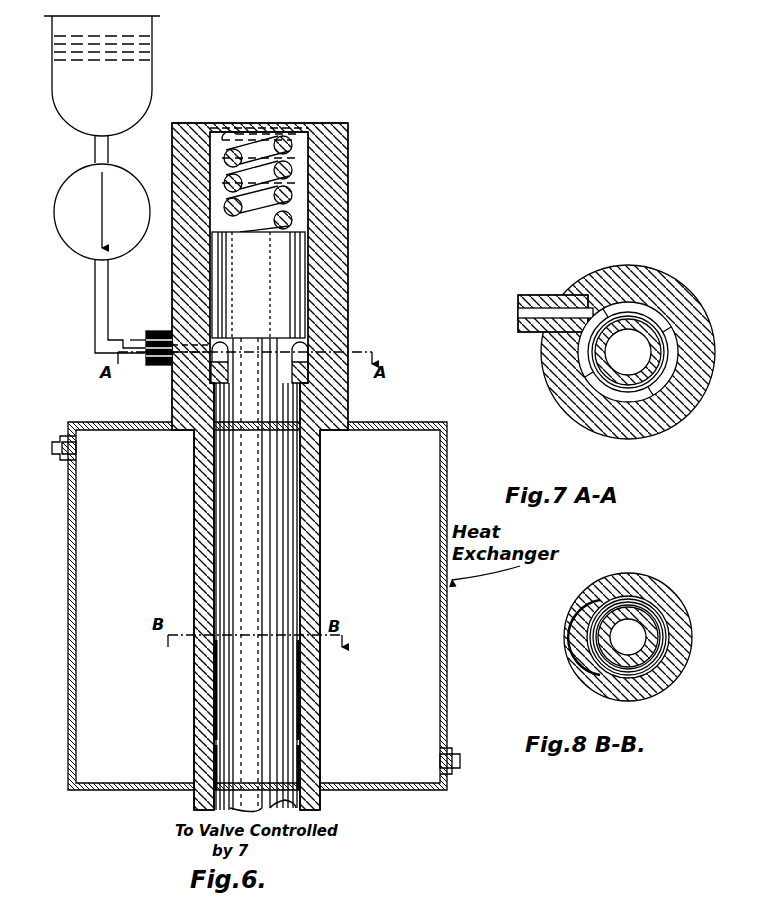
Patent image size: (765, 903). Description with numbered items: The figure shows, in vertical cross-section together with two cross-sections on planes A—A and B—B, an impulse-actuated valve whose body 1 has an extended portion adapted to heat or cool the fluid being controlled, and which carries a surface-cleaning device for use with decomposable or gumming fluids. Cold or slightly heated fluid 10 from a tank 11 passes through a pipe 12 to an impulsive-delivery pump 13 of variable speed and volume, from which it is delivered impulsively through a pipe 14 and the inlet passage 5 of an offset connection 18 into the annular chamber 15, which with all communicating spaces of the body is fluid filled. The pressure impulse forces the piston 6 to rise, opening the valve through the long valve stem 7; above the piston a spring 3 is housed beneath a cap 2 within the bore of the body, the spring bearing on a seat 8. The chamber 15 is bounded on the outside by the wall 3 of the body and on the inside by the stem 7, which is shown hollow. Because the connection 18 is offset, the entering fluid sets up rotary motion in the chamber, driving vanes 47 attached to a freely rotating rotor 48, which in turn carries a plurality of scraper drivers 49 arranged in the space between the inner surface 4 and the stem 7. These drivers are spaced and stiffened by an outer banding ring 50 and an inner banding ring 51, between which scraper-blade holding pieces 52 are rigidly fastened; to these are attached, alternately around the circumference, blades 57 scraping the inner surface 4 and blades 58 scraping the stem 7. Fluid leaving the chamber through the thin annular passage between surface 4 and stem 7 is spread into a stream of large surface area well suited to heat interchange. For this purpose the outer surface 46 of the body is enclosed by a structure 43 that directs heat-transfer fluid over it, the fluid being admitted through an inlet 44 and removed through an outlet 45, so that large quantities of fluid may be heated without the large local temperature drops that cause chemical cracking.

In FIG. 6, the valve body 1 is at (336, 252).
In FIG. 7, the valve body 1 is at (700, 320).
In FIG. 8, the valve body 1 is at (680, 614).
In FIG. 6, the end cap 2 is at (300, 127).
In FIG. 6, the wall 3 is at (312, 210).
In FIG. 7, the wall 3 is at (655, 322).
In FIG. 6, the inner surface 4 is at (305, 420).
In FIG. 8, the inner surface 4 is at (660, 608).
In FIG. 6, the inlet passage 5 is at (138, 342).
In FIG. 7, the inlet passage 5 is at (518, 316).
In FIG. 6, the piston 6 is at (258, 285).
In FIG. 6, the valve stem 7 is at (256, 575).
In FIG. 7, the valve stem 7 is at (628, 352).
In FIG. 8, the valve stem 7 is at (628, 637).
In FIG. 6, the spring seat 8 is at (262, 150).
In FIG. 6, the fluid 10 is at (92, 40).
In FIG. 6, the tank 11 is at (152, 82).
In FIG. 6, the pipe 12 is at (95, 146).
In FIG. 6, the pump 13 is at (54, 220).
In FIG. 6, the pipe 14 is at (95, 328).
In FIG. 6, the annular space 15 is at (300, 348).
In FIG. 7, the annular space 15 is at (680, 364).
In FIG. 6, the offset connection 18 is at (157, 332).
In FIG. 7, the offset connection 18 is at (553, 304).
In FIG. 6, the enclosing structure 43 is at (447, 492).
In FIG. 6, the inlet 44 is at (52, 453).
In FIG. 6, the outlet 45 is at (460, 766).
In FIG. 6, the outer surface 46 is at (320, 594).
In FIG. 8, the outer surface 46 is at (690, 630).
In FIG. 6, the vanes 47 is at (300, 386).
In FIG. 7, the vanes 47 is at (658, 318).
In FIG. 6, the rotor 48 is at (340, 407).
In FIG. 7, the rotor 48 is at (622, 302).
In FIG. 6, the scraper drivers 49 is at (300, 518).
In FIG. 8, the scraper drivers 49 is at (680, 684).
In FIG. 6, the outer banding ring 50 is at (300, 704).
In FIG. 8, the outer banding ring 50 is at (600, 666).
In FIG. 6, the inner banding ring 51 is at (296, 730).
In FIG. 8, the inner banding ring 51 is at (600, 656).
In FIG. 6, the scraper-blade holding pieces 52 is at (216, 688).
In FIG. 8, the scraper-blade holding pieces 52 is at (670, 666).
In FIG. 6, the scraper blades 57 is at (216, 650).
In FIG. 8, the scraper blades 57 is at (668, 648).
In FIG. 6, the scraper blades 58 is at (216, 780).